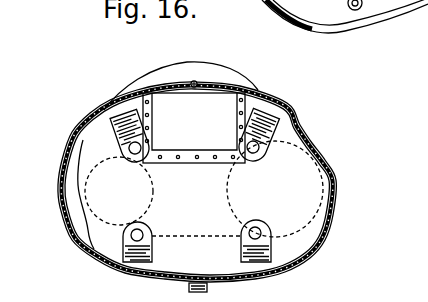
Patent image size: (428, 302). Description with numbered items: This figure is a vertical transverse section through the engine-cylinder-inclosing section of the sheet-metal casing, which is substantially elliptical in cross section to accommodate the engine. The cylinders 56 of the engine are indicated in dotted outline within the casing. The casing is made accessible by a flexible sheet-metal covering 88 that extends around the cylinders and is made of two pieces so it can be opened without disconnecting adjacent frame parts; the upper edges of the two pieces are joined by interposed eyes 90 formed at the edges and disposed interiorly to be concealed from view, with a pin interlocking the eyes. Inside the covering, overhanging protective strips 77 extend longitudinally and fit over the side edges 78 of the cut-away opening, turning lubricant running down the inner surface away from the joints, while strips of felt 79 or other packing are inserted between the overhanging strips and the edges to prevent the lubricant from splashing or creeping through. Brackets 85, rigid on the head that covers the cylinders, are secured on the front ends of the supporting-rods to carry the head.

The cylinders 56 is at (302, 185).
The overhanging protective strips 77 is at (58, 175).
The side edges 78 is at (60, 204).
The strips of felt 79 is at (60, 190).
The brackets 85 is at (278, 121).
The flexible sheet-metal covering 88 is at (104, 117).
The eyes 90 is at (195, 87).